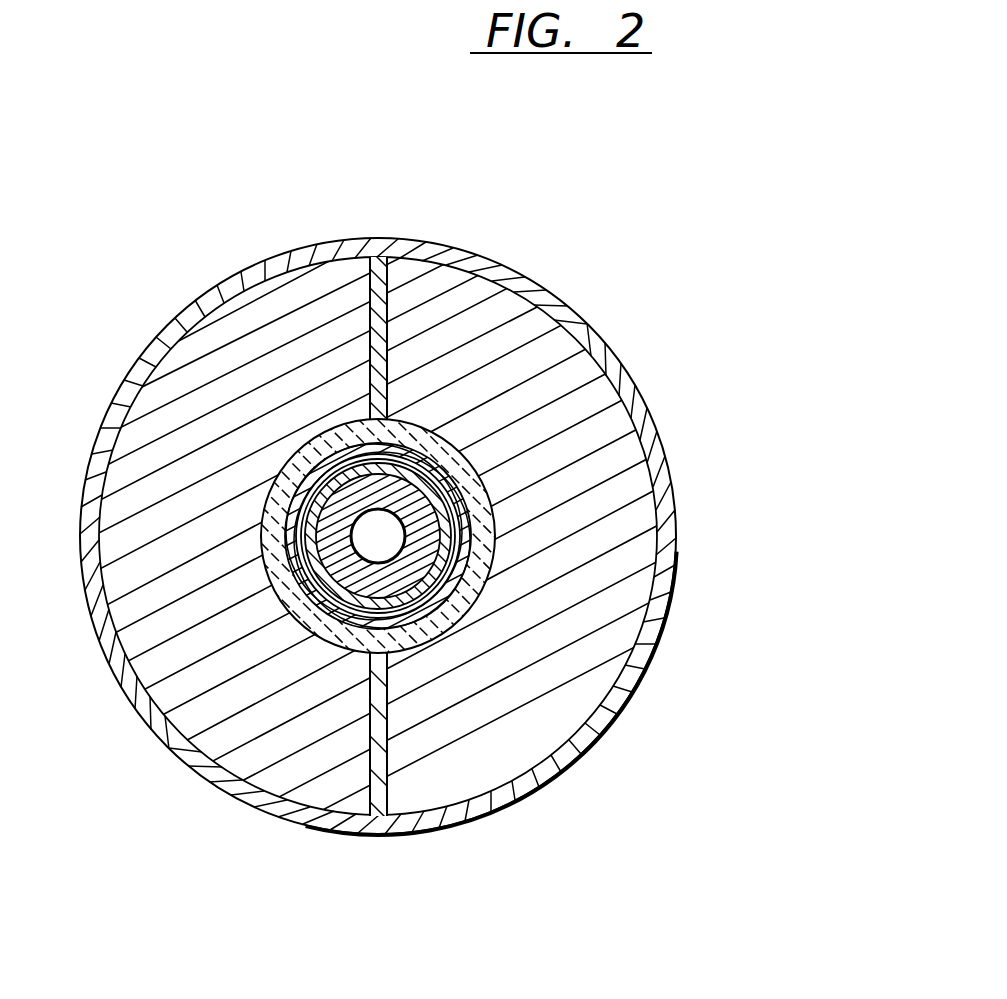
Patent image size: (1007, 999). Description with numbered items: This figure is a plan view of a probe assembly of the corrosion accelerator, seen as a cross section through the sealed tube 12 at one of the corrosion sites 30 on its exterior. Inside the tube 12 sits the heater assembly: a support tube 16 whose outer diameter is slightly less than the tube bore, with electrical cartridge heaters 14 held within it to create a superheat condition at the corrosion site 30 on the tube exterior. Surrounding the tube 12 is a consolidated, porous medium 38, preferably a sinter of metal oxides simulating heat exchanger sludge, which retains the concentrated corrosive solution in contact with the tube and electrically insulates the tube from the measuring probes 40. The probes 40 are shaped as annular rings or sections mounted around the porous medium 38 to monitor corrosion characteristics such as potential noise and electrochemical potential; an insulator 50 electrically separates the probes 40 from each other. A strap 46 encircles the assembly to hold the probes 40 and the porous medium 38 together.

The tube 12 is at (463, 527).
The electrical cartridge heaters 14 is at (320, 547).
The support tube 16 is at (318, 568).
The corrosion sites 30 is at (463, 580).
The consolidated porous medium 38 is at (455, 463).
The measuring probes 40 is at (148, 438).
The strap 46 is at (173, 318).
The insulator 50 is at (383, 278).